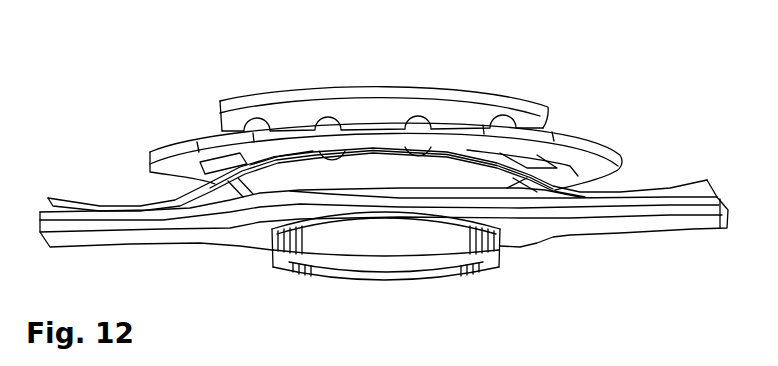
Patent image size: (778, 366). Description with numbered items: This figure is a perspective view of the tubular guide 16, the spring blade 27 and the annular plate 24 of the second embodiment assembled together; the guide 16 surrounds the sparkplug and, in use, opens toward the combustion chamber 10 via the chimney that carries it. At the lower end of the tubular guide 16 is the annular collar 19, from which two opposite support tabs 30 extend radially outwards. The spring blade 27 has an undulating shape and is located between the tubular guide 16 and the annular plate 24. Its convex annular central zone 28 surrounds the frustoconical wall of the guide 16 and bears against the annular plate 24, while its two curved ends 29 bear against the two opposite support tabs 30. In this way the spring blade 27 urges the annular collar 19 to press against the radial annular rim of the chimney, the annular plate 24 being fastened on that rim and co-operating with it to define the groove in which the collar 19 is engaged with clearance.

The chamber 10 is at (280, 4).
The tubular guide 16 is at (522, 89).
The annular collar 19 is at (532, 232).
The annular plate 24 is at (588, 146).
The spring blade 27 is at (457, 152).
The convex annular central zone 28 is at (293, 157).
The curved ends 29 is at (97, 206).
The support tabs 30 is at (88, 232).